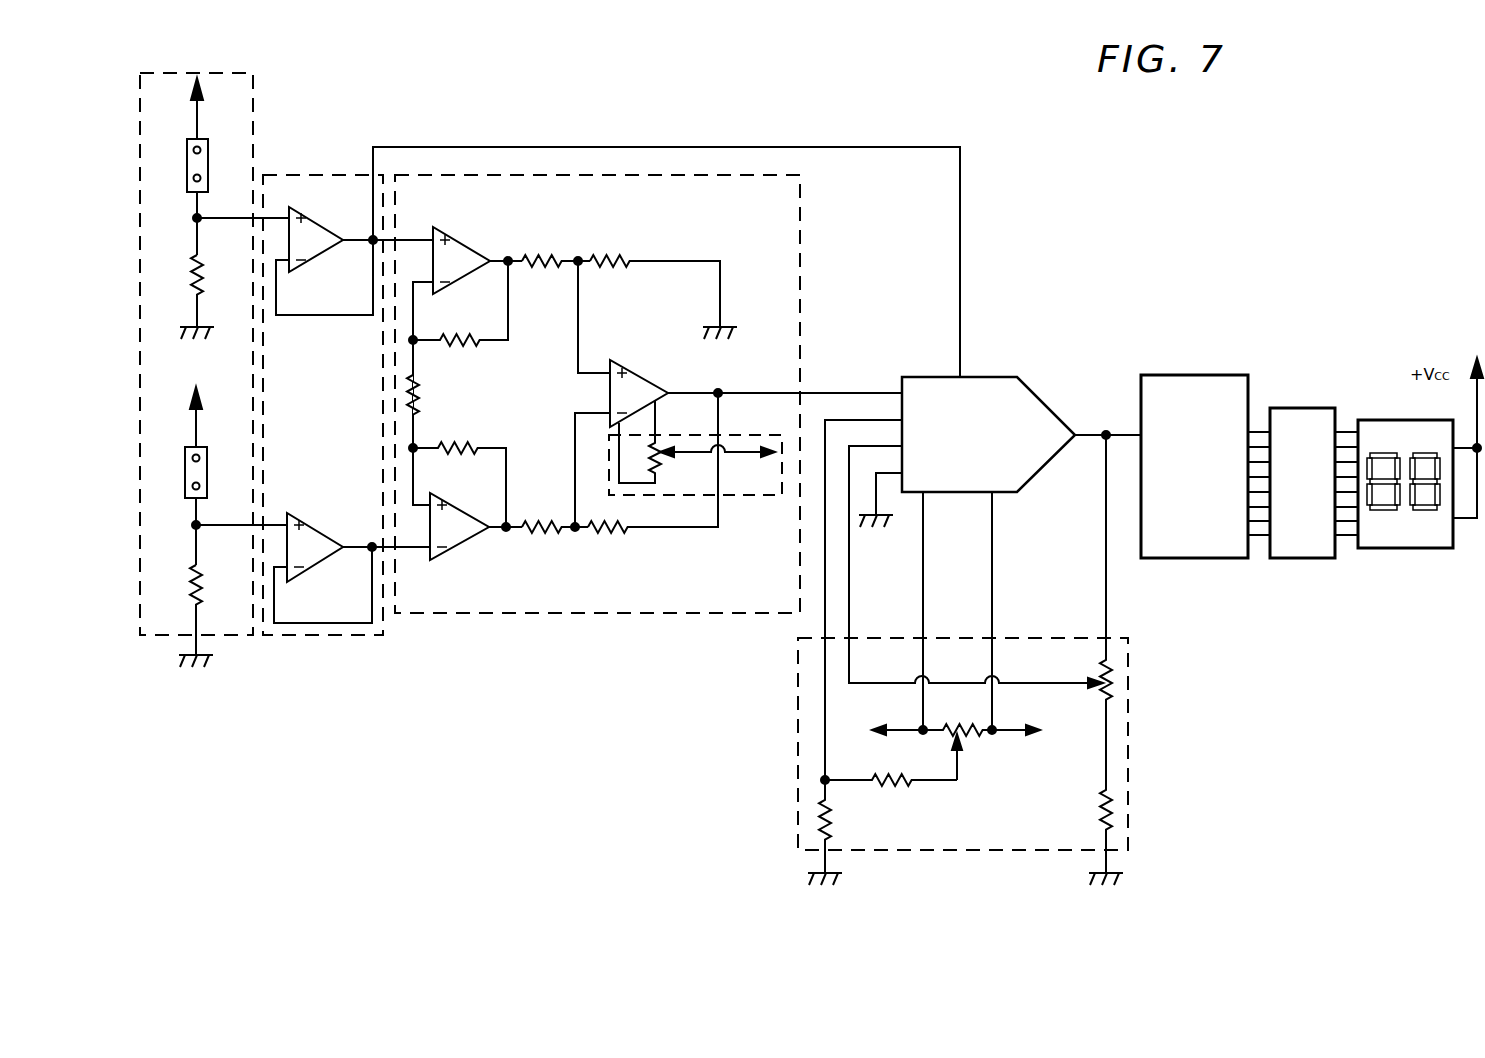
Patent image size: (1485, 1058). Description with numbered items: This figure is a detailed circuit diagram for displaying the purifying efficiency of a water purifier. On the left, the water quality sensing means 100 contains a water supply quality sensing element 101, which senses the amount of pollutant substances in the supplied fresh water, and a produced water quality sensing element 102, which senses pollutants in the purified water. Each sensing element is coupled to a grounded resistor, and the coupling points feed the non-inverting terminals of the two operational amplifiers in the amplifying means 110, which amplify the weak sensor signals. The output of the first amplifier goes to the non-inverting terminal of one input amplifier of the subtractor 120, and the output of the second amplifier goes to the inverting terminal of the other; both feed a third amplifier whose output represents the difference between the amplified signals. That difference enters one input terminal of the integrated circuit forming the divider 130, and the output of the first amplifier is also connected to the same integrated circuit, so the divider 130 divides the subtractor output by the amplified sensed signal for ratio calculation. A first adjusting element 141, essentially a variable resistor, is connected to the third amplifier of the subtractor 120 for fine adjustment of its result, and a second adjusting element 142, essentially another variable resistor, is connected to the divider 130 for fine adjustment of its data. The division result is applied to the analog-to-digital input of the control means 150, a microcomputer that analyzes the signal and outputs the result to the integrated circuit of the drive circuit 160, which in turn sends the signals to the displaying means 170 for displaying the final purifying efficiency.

The water quality sensing means 100 is at (255, 105).
The water supply quality sensing element 101 is at (208, 158).
The produced water quality sensing element 102 is at (207, 470).
The amplifying means 110 is at (332, 637).
The subtractor 120 is at (583, 613).
The divider 130 is at (1016, 377).
The first adjusting element 141 is at (748, 497).
The second adjusting element 142 is at (1128, 793).
The control means 150 is at (1192, 560).
The drive circuit 160 is at (1305, 560).
The displaying means 170 is at (1405, 548).